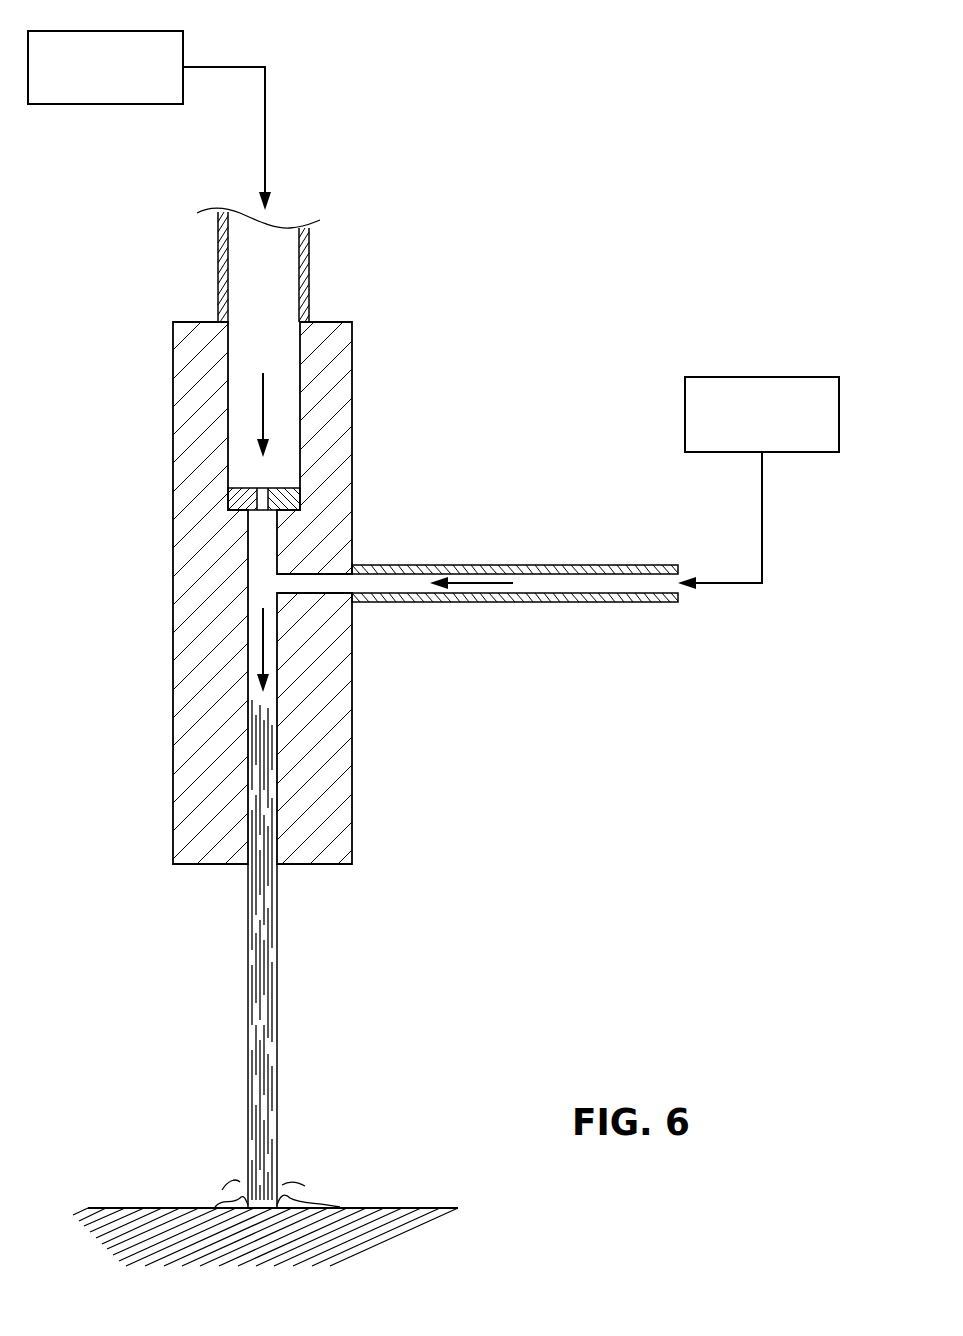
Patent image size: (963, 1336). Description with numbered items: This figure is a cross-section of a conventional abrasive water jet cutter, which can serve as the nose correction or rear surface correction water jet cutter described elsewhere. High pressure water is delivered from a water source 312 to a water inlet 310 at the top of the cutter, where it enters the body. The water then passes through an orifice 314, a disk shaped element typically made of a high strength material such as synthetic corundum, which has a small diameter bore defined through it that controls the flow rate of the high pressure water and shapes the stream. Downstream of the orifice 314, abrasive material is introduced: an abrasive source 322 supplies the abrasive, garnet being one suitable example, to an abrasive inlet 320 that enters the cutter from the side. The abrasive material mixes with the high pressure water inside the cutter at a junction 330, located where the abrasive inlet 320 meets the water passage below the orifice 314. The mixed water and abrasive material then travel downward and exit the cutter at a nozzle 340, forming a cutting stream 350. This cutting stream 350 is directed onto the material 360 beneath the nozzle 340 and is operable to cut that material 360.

The water inlet 310 is at (308, 243).
The water source 312 is at (183, 52).
The orifice 314 is at (250, 488).
The abrasive inlet 320 is at (488, 565).
The abrasive source 322 is at (717, 377).
The junction 330 is at (292, 561).
The nozzle 340 is at (233, 870).
The cutting stream 350 is at (277, 965).
The material 360 is at (118, 1207).